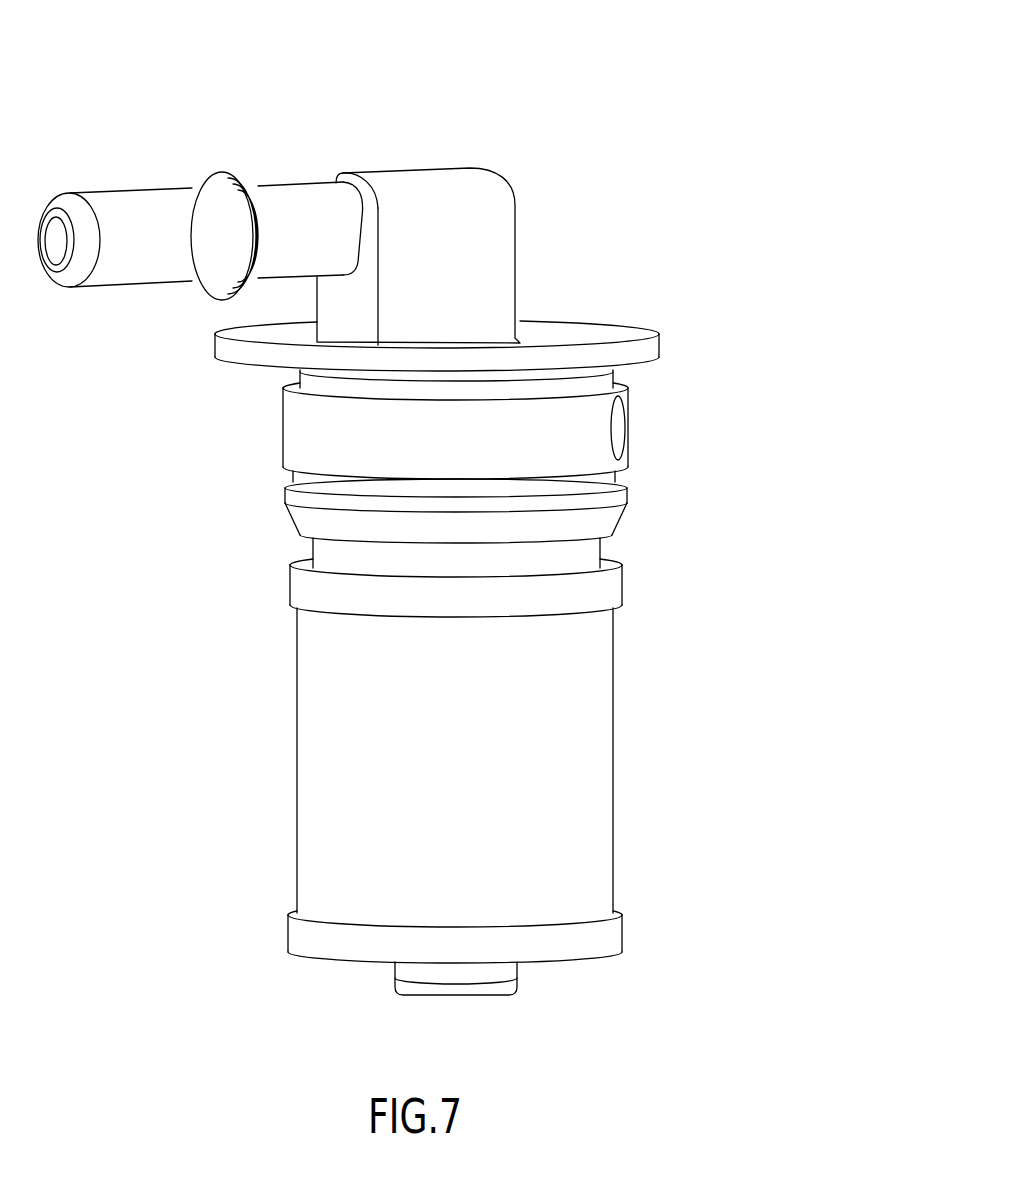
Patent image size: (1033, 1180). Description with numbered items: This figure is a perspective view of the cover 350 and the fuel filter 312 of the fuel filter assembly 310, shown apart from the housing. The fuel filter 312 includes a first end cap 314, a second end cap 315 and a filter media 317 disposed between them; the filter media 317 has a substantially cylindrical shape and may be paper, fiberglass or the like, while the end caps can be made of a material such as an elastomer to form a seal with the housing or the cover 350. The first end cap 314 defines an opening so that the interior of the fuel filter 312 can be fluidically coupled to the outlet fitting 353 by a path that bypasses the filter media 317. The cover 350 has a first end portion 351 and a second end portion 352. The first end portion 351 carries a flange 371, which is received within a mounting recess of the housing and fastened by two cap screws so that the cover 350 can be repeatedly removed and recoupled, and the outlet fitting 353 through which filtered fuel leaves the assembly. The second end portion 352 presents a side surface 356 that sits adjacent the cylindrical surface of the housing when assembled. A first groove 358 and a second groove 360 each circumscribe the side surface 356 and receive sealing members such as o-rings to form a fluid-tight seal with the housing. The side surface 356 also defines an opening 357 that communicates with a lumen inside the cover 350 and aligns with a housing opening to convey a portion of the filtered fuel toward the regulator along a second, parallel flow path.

The fuel filter assembly 310 is at (812, 126).
The fuel filter 312 is at (342, 777).
The first end cap 314 is at (290, 578).
The second end cap 315 is at (608, 942).
The filter media 317 is at (545, 782).
The cover 350 is at (492, 175).
The first end portion 351 is at (545, 313).
The second end portion 352 is at (283, 507).
The outlet fitting 353 is at (275, 193).
The side surface 356 is at (283, 442).
The opening 357 is at (630, 430).
The first groove 358 is at (300, 380).
The second groove 360 is at (625, 480).
The flange 371 is at (658, 345).